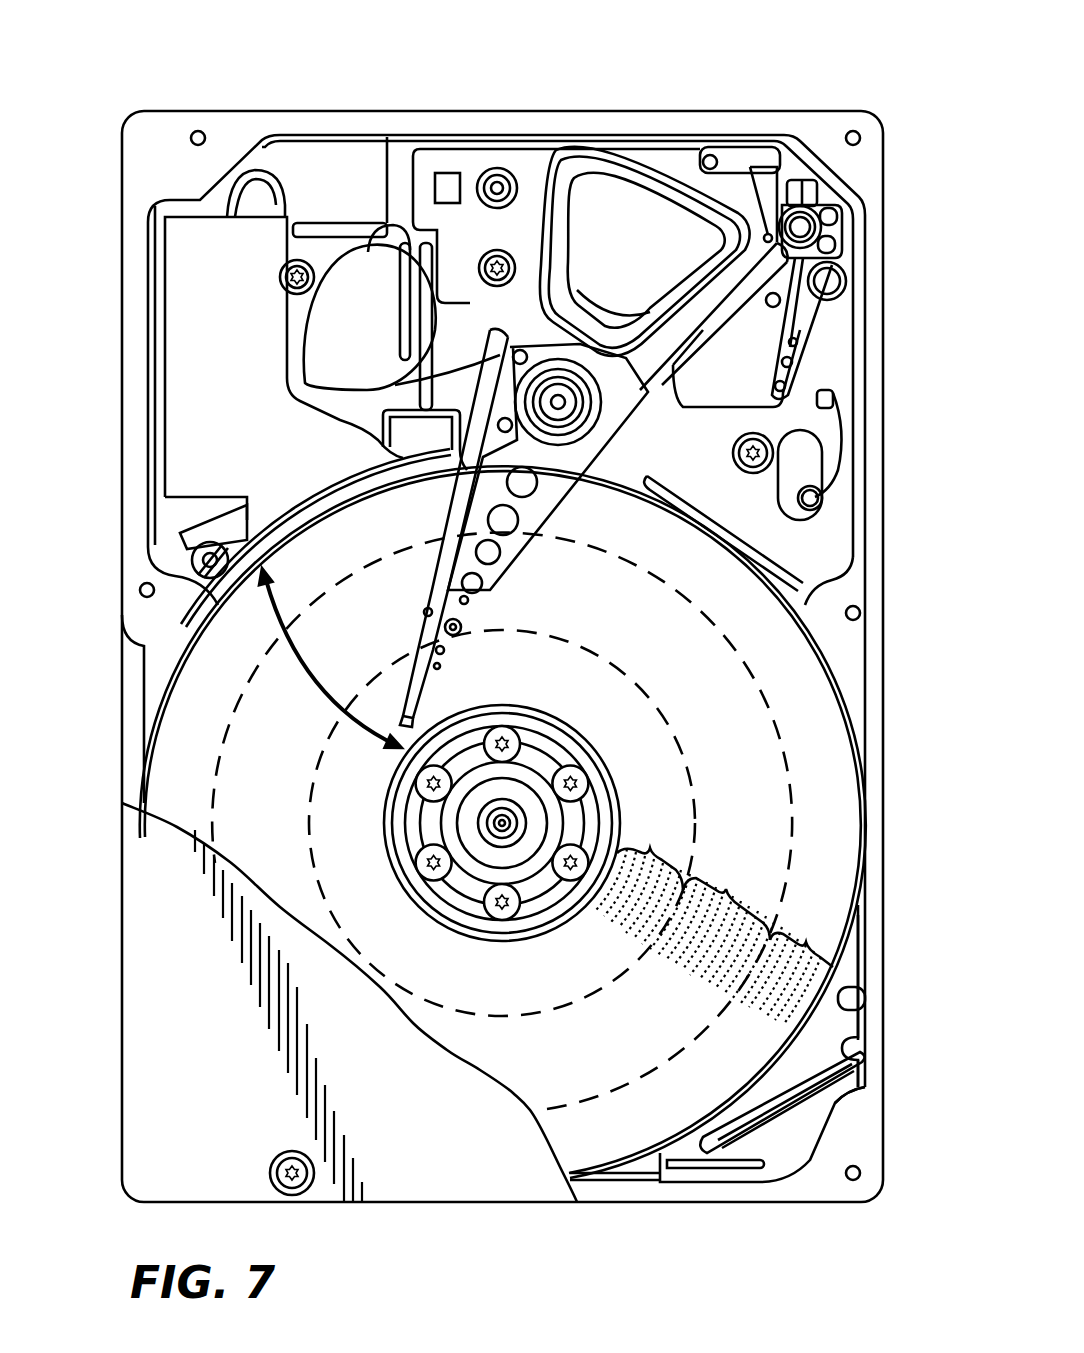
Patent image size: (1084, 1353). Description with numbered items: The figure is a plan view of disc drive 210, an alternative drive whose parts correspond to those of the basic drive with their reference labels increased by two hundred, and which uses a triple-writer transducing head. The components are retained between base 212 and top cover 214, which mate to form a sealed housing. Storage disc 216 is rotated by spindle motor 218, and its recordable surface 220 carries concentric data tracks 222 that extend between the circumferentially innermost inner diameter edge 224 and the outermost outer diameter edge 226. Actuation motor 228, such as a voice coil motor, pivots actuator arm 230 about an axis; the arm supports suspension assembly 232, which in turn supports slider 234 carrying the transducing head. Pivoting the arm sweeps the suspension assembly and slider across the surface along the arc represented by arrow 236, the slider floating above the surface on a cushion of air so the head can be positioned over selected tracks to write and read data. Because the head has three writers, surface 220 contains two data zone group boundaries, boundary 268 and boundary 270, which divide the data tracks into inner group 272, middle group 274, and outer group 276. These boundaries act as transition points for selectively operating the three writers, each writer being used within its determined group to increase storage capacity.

The disc drive 210 is at (183, 33).
The base 212 is at (303, 382).
The top cover 214 is at (400, 1190).
The storage disc 216 is at (836, 660).
The spindle motor 218 is at (500, 823).
The surface 220 is at (804, 744).
The data tracks 222 is at (814, 1001).
The inner diameter edge 224 is at (573, 730).
The outer diameter edge 226 is at (864, 840).
The actuation motor 228 is at (680, 155).
The actuator arm 230 is at (555, 487).
The suspension assembly 232 is at (468, 690).
The slider 234 is at (395, 722).
The arrow 236 is at (320, 683).
The boundary 268 is at (622, 672).
The boundary 270 is at (762, 708).
The inner group 272 is at (643, 884).
The middle group 274 is at (714, 927).
The outer group 276 is at (783, 969).